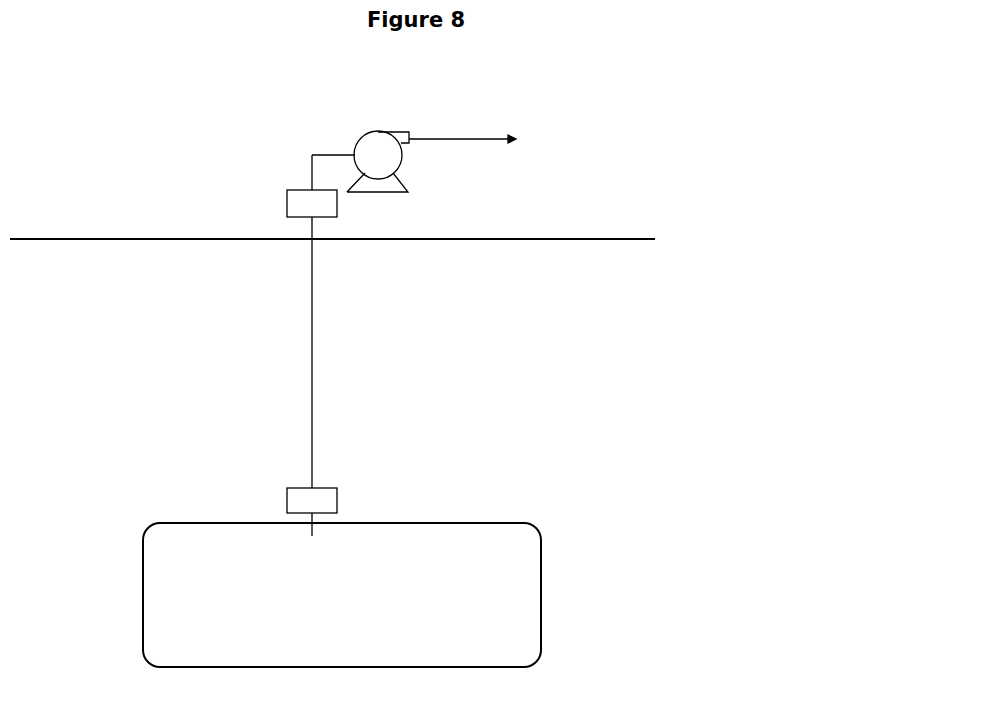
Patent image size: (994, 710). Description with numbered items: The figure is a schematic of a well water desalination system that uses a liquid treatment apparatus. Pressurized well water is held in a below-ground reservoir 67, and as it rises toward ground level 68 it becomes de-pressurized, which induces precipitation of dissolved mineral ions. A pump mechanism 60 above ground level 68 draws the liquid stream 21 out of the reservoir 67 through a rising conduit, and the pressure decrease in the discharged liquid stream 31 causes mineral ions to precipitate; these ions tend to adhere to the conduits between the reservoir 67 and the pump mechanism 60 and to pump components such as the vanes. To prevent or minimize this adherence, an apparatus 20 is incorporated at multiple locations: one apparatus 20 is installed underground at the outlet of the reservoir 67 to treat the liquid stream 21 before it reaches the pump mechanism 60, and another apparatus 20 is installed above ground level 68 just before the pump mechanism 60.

The pump mechanism 60 is at (354, 143).
The liquid stream 31 is at (485, 130).
The apparatus 20 is at (278, 199).
The ground level 68 is at (351, 241).
The liquid stream 21 is at (297, 362).
The reservoir 67 is at (448, 518).